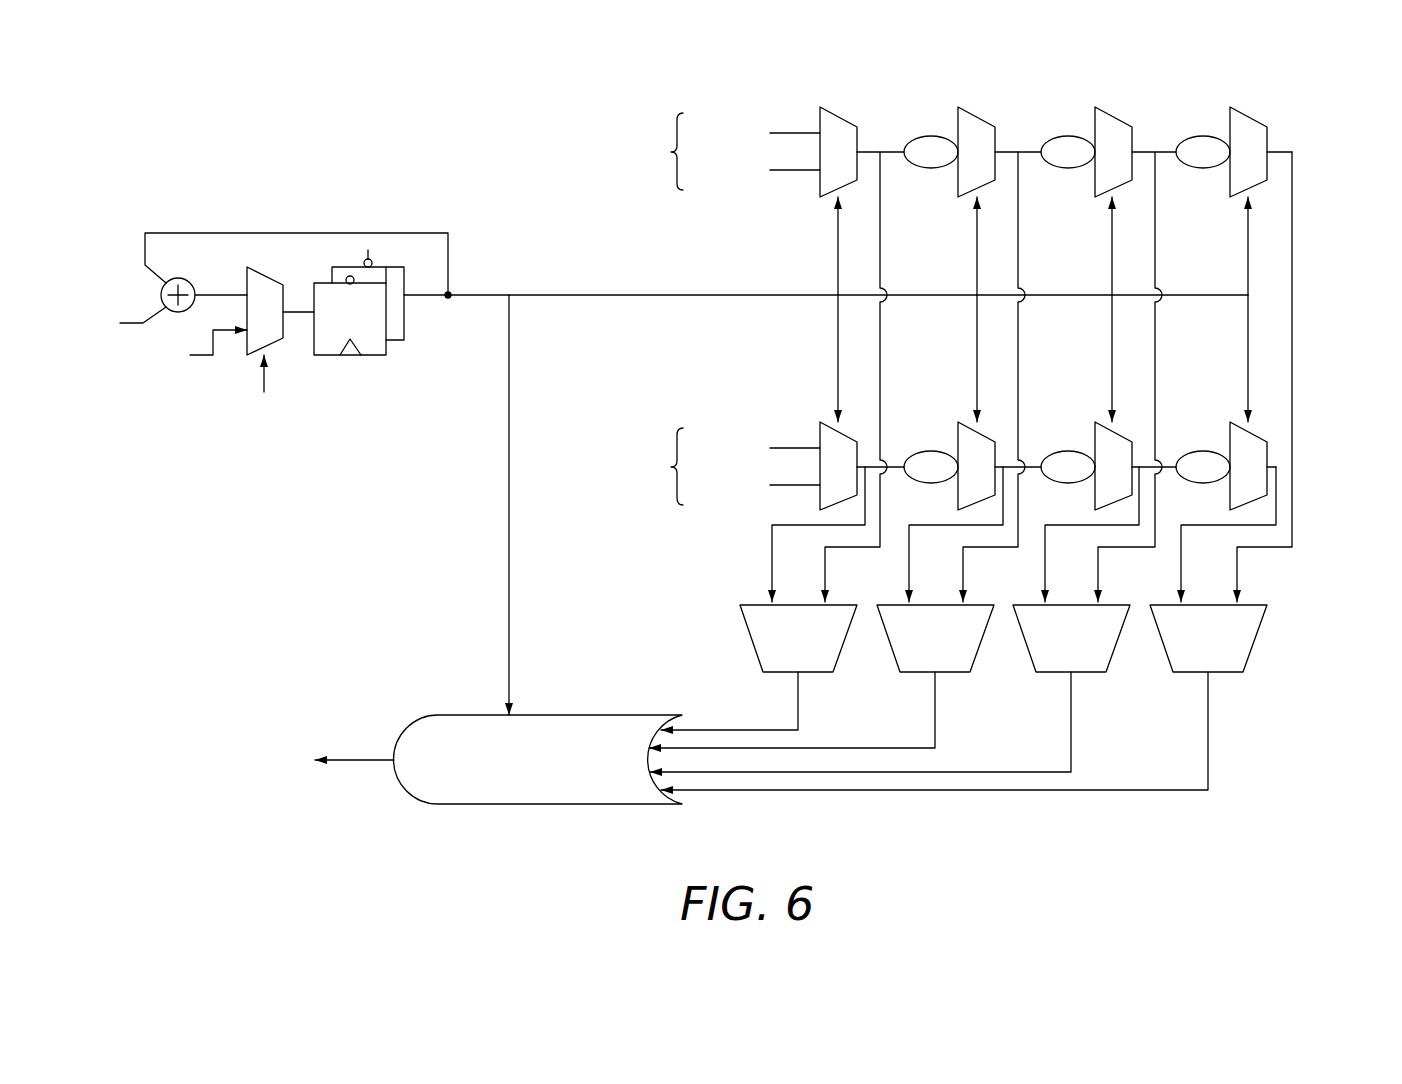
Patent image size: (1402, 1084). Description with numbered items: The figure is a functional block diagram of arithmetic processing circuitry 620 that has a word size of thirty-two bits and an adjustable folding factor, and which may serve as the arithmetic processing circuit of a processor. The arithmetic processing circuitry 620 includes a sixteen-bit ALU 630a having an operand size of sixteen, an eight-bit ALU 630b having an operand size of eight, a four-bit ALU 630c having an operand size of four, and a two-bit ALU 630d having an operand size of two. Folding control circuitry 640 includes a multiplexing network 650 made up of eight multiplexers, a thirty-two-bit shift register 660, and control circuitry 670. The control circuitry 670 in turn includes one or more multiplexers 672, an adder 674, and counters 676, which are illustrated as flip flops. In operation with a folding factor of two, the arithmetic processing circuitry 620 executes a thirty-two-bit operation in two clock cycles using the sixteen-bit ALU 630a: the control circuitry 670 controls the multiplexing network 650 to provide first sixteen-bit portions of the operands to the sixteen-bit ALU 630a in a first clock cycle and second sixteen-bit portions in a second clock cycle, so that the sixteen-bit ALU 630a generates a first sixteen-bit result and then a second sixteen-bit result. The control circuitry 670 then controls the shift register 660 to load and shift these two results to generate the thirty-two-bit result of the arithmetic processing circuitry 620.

The arithmetic processing circuitry 620 is at (117, 142).
The 16-bit ALU 630a is at (755, 653).
The 8-bit ALU 630b is at (892, 653).
The 4-bit ALU 630c is at (1028, 653).
The 2-bit ALU 630d is at (1165, 653).
The folding control circuitry 640 is at (140, 562).
The multiplexing network 650 is at (1322, 342).
The 32-bit shift register 660 is at (472, 713).
The control circuitry 670 is at (190, 412).
The multiplexers 672 is at (276, 346).
The adder 674 is at (170, 279).
The counters 676 is at (343, 267).